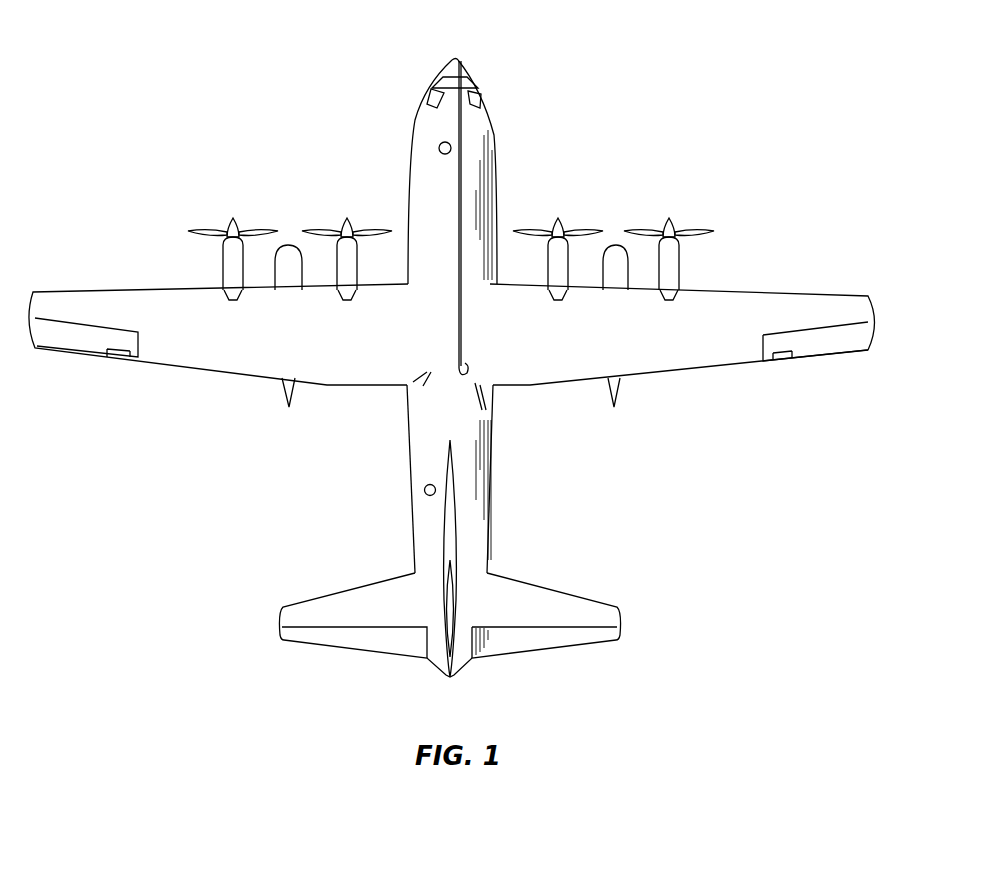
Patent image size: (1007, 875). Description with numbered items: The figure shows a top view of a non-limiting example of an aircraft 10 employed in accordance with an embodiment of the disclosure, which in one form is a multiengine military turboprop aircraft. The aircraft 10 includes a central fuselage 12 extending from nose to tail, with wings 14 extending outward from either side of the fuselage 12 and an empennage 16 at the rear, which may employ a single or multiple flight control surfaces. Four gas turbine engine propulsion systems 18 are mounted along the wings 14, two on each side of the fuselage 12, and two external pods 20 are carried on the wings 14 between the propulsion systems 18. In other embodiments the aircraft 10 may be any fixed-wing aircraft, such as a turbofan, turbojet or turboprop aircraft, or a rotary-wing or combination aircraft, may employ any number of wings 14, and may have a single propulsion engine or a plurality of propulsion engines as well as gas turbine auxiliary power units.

The aircraft 10 is at (292, 56).
The fuselage 12 is at (497, 184).
The wings 14 is at (97, 290).
The empennage 16 is at (626, 522).
The gas turbine engine propulsion systems 18 is at (223, 268).
The external pods 20 is at (290, 247).